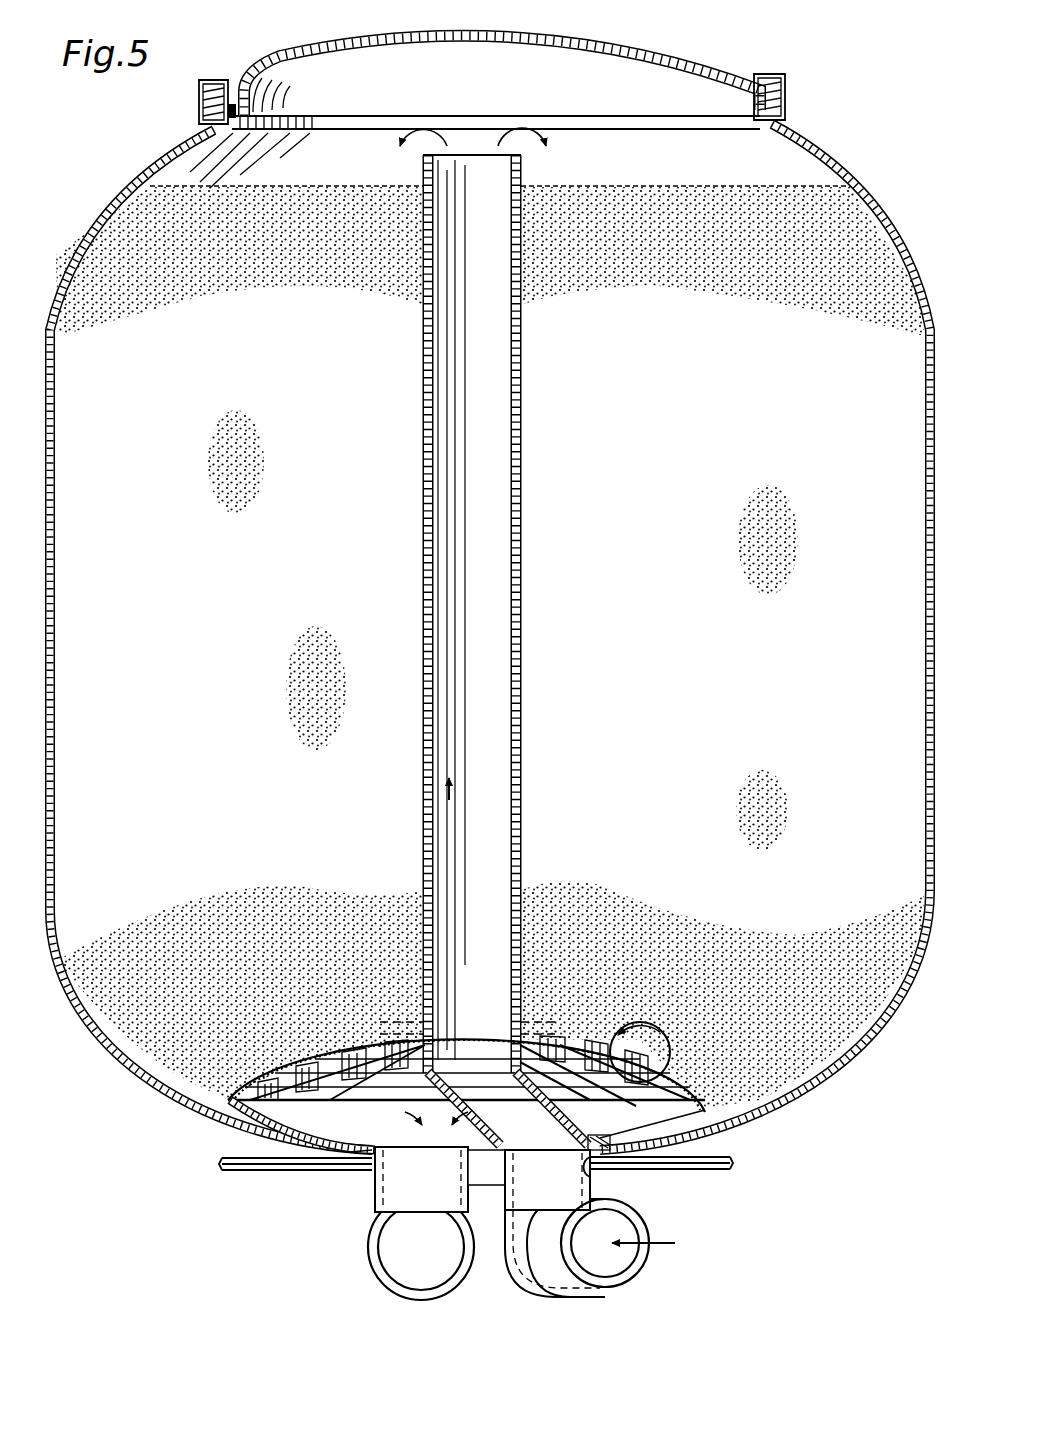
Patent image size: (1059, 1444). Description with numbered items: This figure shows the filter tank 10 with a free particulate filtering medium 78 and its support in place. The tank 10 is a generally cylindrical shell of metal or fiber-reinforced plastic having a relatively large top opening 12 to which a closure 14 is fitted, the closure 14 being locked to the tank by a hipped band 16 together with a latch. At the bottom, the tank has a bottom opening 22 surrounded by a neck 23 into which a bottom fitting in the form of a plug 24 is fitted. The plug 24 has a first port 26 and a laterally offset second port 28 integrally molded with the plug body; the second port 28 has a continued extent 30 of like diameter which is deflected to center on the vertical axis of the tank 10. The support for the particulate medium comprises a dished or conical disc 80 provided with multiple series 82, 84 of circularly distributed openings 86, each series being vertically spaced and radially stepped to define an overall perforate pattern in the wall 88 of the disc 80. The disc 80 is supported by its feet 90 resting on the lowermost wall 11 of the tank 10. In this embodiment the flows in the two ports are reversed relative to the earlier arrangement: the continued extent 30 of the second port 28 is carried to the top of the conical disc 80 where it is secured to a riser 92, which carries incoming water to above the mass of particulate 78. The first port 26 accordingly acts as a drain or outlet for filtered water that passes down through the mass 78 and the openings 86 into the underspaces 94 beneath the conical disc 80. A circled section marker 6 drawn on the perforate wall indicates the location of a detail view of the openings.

The tank 10 is at (835, 130).
The lowermost wall 11 is at (288, 1162).
The top opening 12 is at (598, 60).
The closure 14 is at (285, 48).
The hipped band 16 is at (790, 86).
The bottom opening 22 is at (590, 1180).
The neck 23 is at (352, 1166).
The plug 24 is at (372, 1200).
The first port 26 is at (434, 1189).
The second port 28 is at (625, 1272).
The continued extent 30 is at (540, 1122).
The free particulate filter medium 78 is at (560, 968).
The conical disc 80 is at (326, 1030).
The series of openings 82 is at (232, 1088).
The series of openings 84 is at (262, 1052).
The openings 86 is at (300, 1040).
The wall 88 is at (290, 1108).
The feet 90 is at (348, 1070).
The riser 92 is at (521, 702).
The underspaces 94 is at (695, 1122).
The section indicator 6 is at (640, 1046).